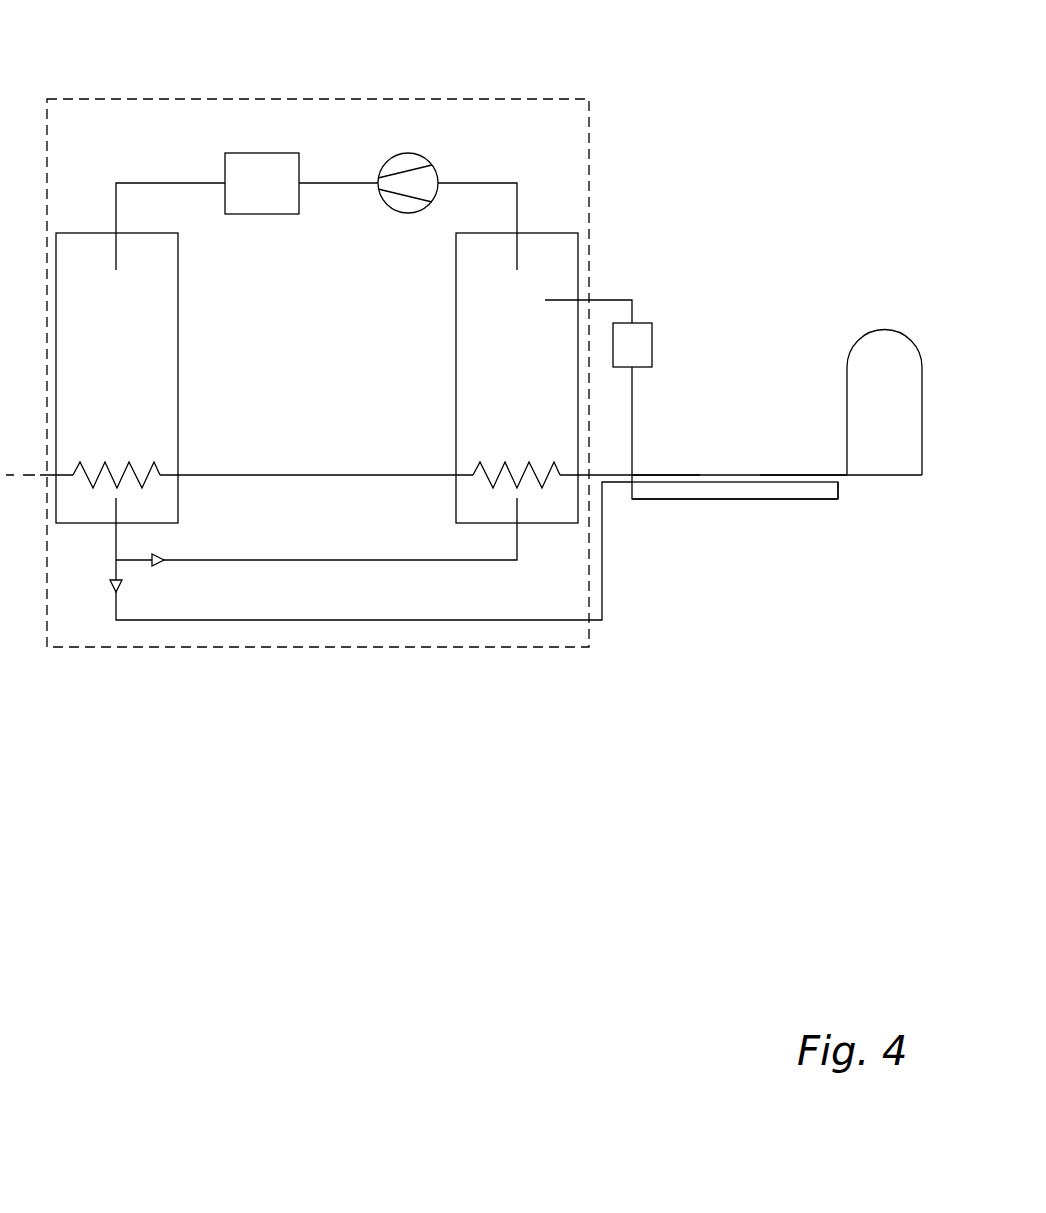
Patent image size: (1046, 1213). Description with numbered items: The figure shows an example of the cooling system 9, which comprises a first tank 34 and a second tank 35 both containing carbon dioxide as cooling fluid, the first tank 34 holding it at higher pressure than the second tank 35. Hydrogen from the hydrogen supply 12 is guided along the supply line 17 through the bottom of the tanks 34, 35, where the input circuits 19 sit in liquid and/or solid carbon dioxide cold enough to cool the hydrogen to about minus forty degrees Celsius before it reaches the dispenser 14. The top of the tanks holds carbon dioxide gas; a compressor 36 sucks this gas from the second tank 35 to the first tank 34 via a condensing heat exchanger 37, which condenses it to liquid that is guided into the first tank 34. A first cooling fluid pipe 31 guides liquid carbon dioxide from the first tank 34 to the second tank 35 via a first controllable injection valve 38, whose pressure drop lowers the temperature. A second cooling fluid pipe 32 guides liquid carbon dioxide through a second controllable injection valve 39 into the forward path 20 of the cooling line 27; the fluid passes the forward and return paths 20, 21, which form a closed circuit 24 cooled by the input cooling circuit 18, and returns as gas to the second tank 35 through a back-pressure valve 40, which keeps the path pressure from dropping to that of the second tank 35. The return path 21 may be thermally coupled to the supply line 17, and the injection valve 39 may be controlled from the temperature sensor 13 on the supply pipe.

The cooling system 9 is at (542, 99).
The hydrogen supply 12 is at (32, 476).
The temperature sensor 13 is at (838, 475).
The dispenser 14 is at (847, 360).
The supply line 17 is at (653, 475).
The input cooling circuit 18 is at (150, 263).
The input circuits 19 is at (143, 448).
The forward path 20 is at (823, 487).
The return path 21 is at (825, 500).
The closed circuit 24 is at (668, 499).
The cooling line 27 is at (840, 488).
The first cooling fluid pipe 31 is at (340, 560).
The second cooling fluid pipe 32 is at (443, 620).
The first tank 34 is at (88, 245).
The second tank 35 is at (562, 263).
The compressor 36 is at (405, 153).
The condensing heat exchanger 37 is at (262, 153).
The first controllable injection valve 38 is at (160, 562).
The second controllable injection valve 39 is at (115, 593).
The back-pressure valve 40 is at (653, 337).